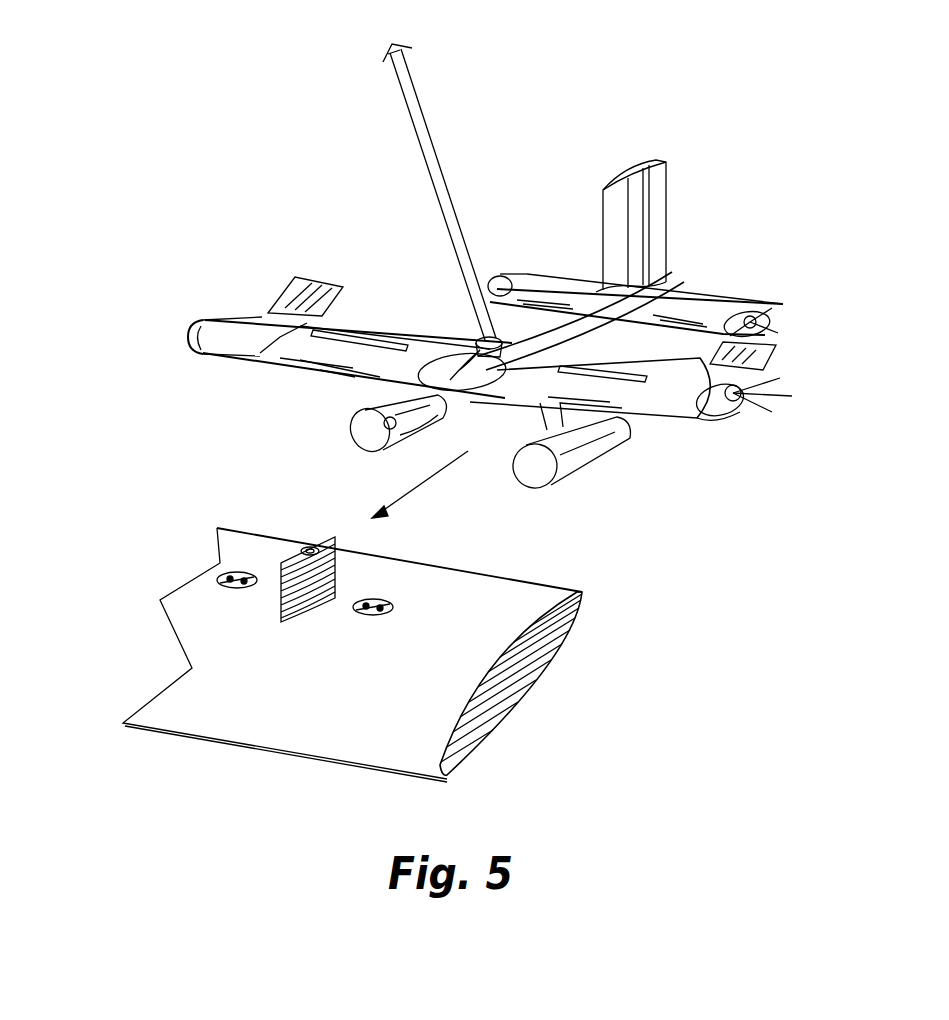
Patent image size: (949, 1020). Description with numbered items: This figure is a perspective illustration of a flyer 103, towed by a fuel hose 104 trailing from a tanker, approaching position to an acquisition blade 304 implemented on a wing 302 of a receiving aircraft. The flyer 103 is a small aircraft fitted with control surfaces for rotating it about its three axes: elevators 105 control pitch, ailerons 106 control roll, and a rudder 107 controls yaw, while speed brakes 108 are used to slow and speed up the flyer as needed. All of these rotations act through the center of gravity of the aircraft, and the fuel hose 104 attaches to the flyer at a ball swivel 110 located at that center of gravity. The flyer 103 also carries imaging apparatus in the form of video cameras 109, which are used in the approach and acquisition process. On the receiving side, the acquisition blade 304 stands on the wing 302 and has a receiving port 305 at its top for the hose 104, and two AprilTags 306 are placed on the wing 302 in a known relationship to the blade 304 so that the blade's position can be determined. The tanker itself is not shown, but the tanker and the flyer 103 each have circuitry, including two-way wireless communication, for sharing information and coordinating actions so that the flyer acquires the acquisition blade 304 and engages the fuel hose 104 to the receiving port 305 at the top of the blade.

The flyer 103 is at (549, 138).
The fuel hose 104 is at (438, 153).
The elevators 105 is at (727, 300).
The ailerons 106 is at (293, 275).
The rudder 107 is at (666, 223).
The speed brakes 108 is at (363, 320).
The video cameras 109 is at (187, 337).
The ball swivel 110 is at (486, 332).
The wing 302 is at (518, 603).
The acquisition blade 304 is at (292, 548).
The receiving port 305 is at (305, 548).
The AprilTags 306 is at (225, 575).